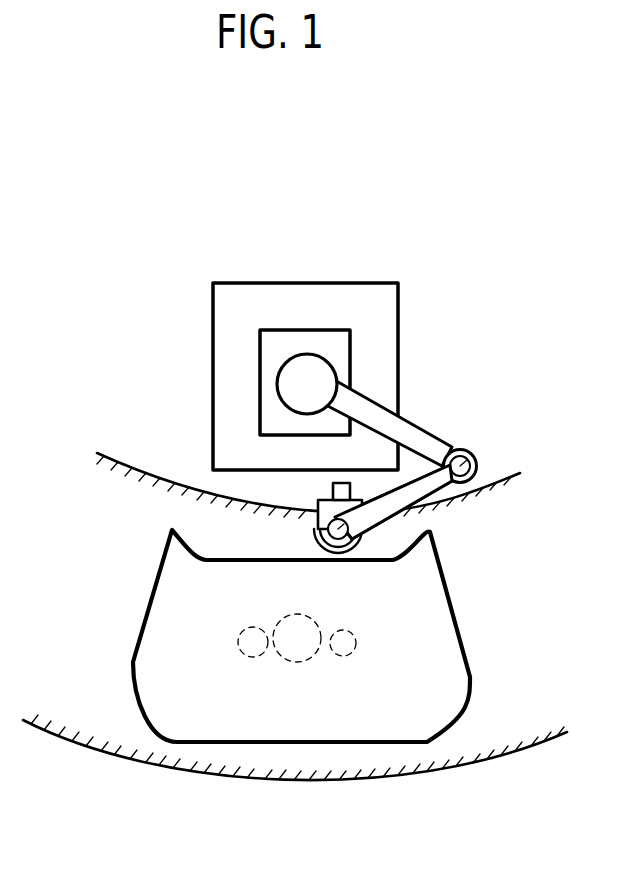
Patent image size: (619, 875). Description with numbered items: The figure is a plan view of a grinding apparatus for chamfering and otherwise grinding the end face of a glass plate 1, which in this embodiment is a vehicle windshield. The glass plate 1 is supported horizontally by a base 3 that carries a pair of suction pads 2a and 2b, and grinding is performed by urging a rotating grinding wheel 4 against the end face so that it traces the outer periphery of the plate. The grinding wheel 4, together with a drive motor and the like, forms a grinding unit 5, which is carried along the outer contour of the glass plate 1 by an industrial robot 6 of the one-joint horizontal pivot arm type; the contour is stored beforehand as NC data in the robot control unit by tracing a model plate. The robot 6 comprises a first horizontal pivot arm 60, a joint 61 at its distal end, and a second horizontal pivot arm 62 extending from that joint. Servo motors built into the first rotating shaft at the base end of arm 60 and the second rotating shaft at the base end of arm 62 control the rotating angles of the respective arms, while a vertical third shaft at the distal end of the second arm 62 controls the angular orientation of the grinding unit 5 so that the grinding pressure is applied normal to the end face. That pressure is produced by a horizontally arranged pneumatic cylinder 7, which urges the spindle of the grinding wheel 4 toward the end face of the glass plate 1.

The glass plate 1 is at (195, 703).
The suction pad 2a is at (240, 633).
The suction pad 2b is at (357, 647).
The base 3 is at (308, 616).
The grinding wheel 4 is at (342, 510).
The grinding unit 5 is at (432, 435).
The industrial robot 6 is at (341, 375).
The first horizontal pivot arm 60 is at (402, 428).
The joint 61 is at (502, 452).
The second horizontal pivot arm 62 is at (423, 490).
The pneumatic cylinder 7 is at (332, 489).